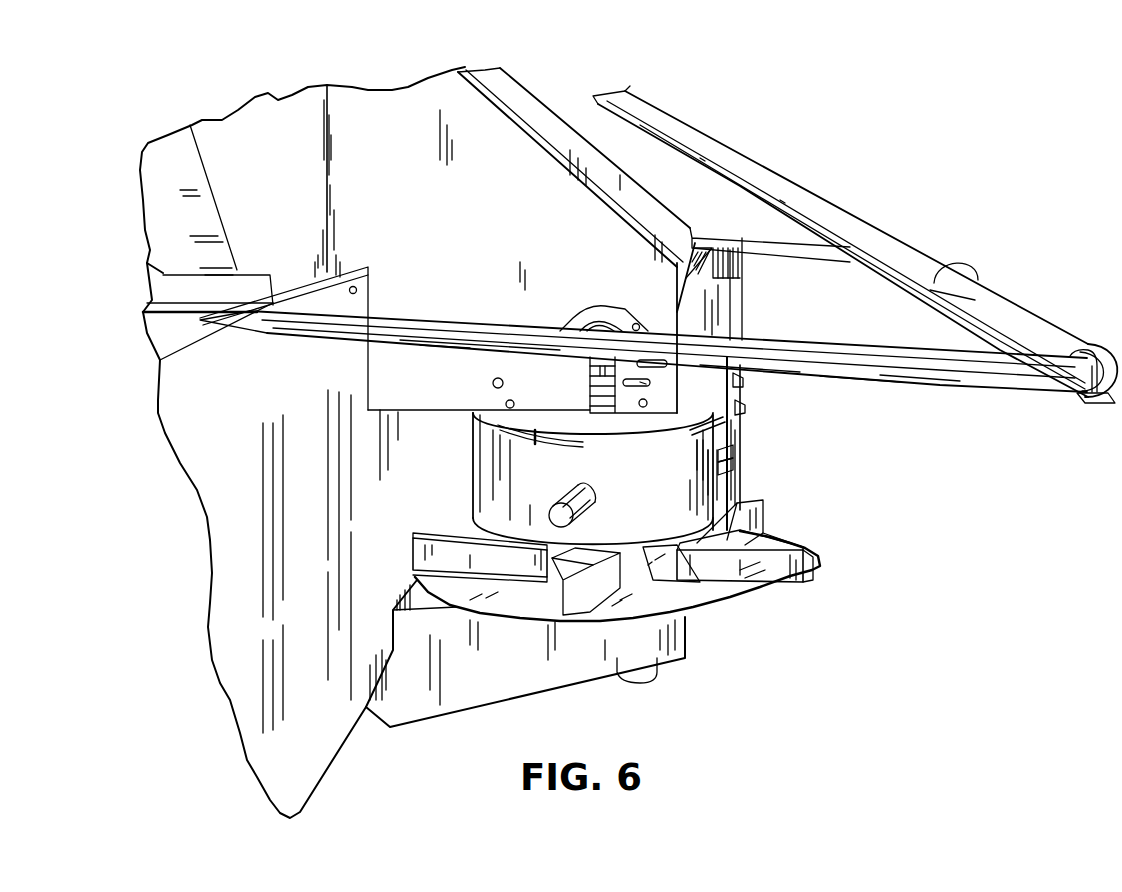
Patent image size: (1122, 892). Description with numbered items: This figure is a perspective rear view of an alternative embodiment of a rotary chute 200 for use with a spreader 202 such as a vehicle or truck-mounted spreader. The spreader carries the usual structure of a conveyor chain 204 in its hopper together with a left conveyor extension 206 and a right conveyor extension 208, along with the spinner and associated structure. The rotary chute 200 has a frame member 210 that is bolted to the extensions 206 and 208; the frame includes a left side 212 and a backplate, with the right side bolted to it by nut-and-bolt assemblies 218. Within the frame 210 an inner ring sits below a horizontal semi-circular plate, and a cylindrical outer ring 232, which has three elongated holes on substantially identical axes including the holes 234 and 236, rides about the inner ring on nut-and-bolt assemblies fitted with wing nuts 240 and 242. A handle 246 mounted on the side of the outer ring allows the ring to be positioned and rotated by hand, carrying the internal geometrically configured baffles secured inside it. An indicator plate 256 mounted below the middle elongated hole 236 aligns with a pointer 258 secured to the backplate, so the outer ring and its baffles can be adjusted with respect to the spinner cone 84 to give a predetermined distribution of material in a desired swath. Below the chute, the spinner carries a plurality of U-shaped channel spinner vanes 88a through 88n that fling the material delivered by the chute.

The rotary chute 200 is at (473, 405).
The spreader 202 is at (288, 209).
The conveyor chain 204 is at (588, 308).
The left conveyor extension 206 is at (513, 285).
The right conveyor extension 208 is at (643, 188).
The frame member 210 is at (732, 308).
The left side 212 is at (720, 331).
The nut-and-bolt assemblies 218 is at (650, 383).
The cylindrical outer ring 232 is at (736, 503).
The elongated hole 234 is at (557, 437).
The middle elongated hole 236 is at (697, 430).
The wing nut 240 is at (535, 440).
The wing nut 242 is at (745, 413).
The handle 246 is at (572, 520).
The indicator plate 256 is at (737, 463).
The pointer 258 is at (737, 443).
The spinner cone 84 is at (675, 582).
The spinner vane 88a is at (424, 549).
The spinner vane 88n is at (753, 513).